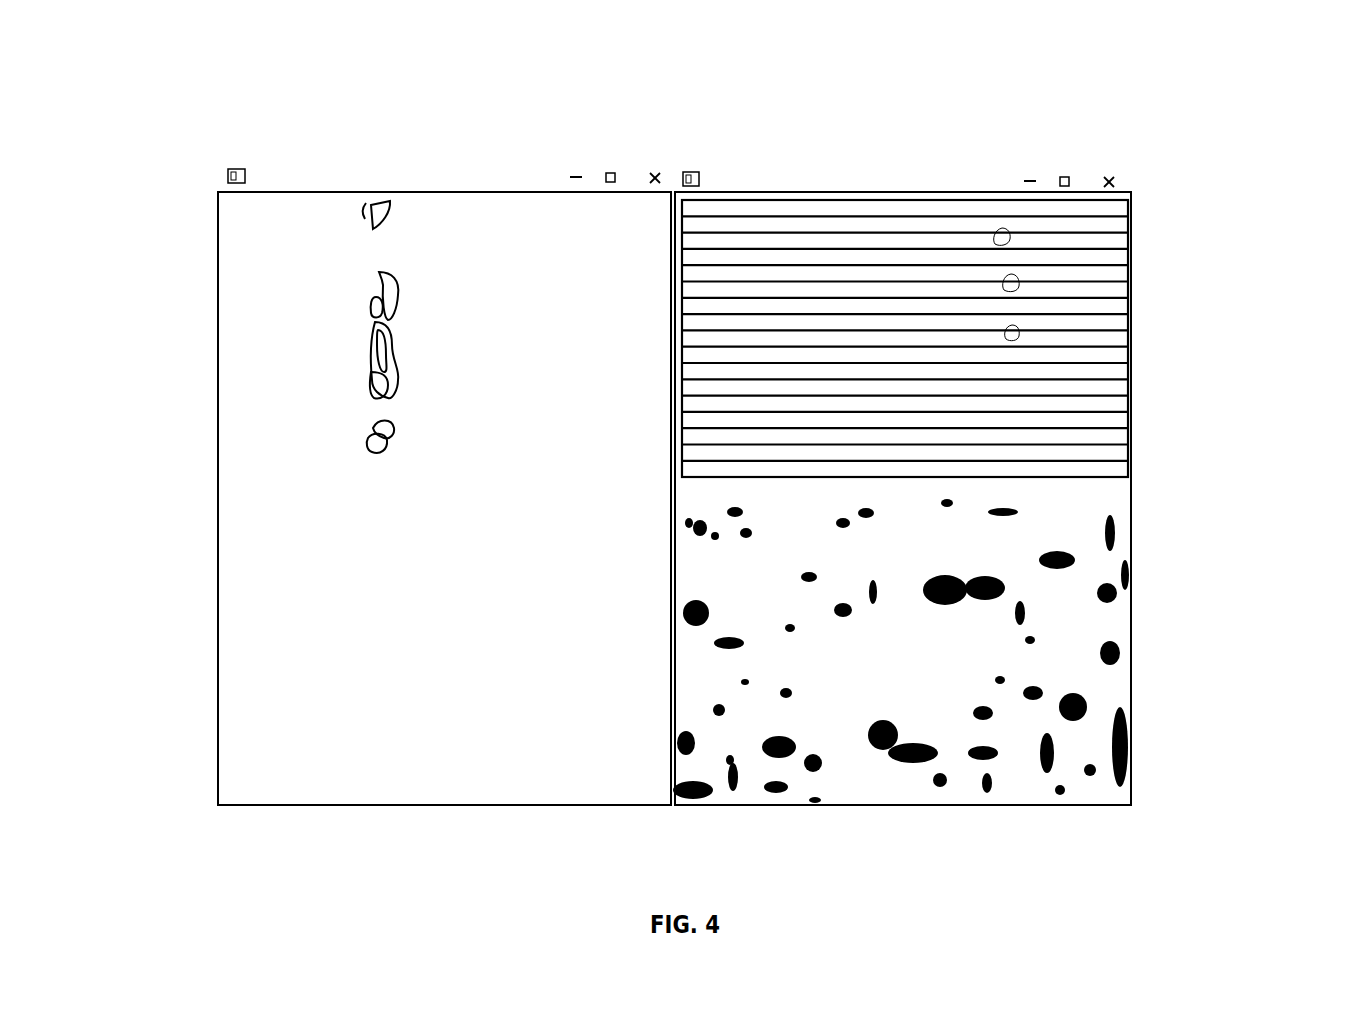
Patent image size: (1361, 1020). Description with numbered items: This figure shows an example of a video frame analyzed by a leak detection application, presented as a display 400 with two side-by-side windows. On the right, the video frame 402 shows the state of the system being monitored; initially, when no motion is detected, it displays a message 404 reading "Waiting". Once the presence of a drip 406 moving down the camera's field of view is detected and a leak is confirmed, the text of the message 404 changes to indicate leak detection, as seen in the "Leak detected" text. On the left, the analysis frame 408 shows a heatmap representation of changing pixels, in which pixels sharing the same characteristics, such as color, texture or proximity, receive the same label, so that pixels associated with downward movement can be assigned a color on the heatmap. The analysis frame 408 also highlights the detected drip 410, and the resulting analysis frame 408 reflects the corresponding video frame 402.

The user interface display 400 is at (1302, 64).
The video frame 402 is at (1152, 287).
The message 404 is at (790, 237).
The drip 406 is at (1015, 337).
The analysis frame 408 is at (198, 262).
The detected drip 410 is at (363, 371).